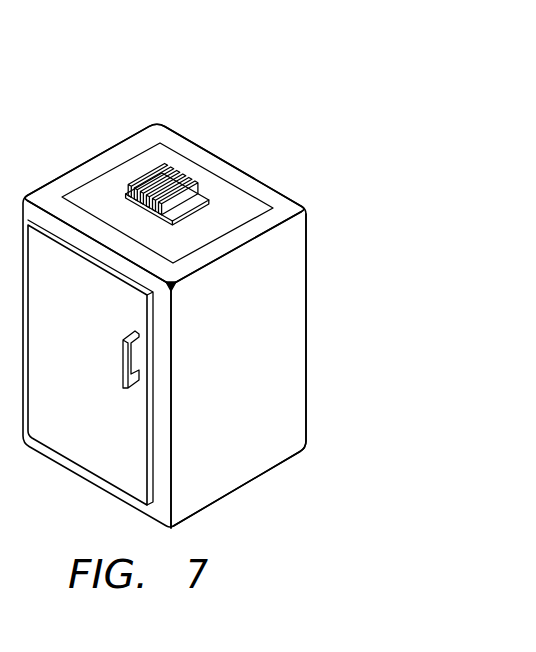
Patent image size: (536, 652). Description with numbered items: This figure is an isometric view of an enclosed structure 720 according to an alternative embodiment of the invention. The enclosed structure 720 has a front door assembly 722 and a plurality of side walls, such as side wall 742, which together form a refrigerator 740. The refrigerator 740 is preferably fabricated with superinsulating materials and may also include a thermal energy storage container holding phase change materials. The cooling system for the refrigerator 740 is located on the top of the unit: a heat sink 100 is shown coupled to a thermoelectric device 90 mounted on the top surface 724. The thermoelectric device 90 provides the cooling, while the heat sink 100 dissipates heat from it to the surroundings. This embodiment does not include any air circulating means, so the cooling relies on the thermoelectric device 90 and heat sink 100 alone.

The enclosed structure 720 is at (190, 280).
The front door assembly 722 is at (97, 468).
The top surface 724 is at (287, 203).
The refrigerator 740 is at (312, 296).
The side wall 742 is at (238, 487).
The heat sink 100 is at (192, 182).
The thermoelectric device 90 is at (211, 188).